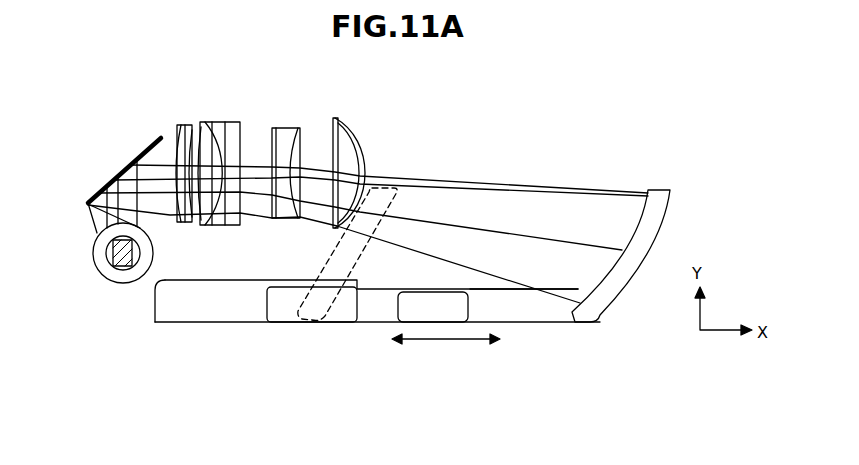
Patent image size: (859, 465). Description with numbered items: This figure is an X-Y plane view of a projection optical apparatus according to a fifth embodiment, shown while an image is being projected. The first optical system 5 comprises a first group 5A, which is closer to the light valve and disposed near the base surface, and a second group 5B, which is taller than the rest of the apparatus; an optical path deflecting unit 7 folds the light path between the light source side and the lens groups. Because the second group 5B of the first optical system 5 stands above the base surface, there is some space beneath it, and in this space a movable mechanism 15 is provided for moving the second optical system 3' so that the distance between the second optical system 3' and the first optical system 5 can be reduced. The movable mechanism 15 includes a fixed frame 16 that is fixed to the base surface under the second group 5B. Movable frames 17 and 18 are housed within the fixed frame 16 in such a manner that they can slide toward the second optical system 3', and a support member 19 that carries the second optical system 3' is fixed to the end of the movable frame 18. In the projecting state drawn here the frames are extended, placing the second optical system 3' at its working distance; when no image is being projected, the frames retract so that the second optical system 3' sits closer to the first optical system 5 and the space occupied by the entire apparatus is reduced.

The first optical system 5 is at (148, 130).
The first group 5A is at (76, 205).
The second group 5B is at (357, 115).
The optical path deflecting unit 7 is at (110, 177).
The second optical system 3' is at (621, 228).
The support member 19 is at (410, 178).
The movable mechanism 15 is at (203, 352).
The fixed frame 16 is at (162, 320).
The movable frame 17 is at (382, 315).
The movable frame 18 is at (532, 315).